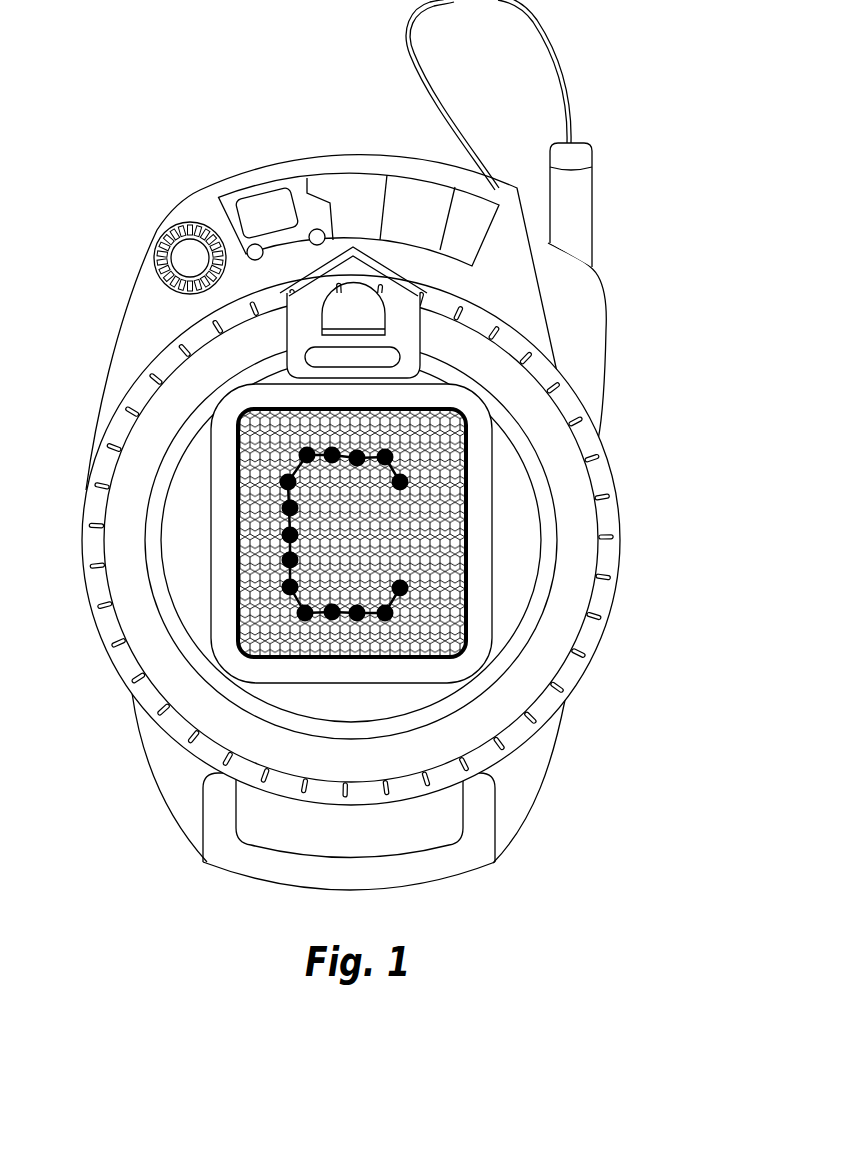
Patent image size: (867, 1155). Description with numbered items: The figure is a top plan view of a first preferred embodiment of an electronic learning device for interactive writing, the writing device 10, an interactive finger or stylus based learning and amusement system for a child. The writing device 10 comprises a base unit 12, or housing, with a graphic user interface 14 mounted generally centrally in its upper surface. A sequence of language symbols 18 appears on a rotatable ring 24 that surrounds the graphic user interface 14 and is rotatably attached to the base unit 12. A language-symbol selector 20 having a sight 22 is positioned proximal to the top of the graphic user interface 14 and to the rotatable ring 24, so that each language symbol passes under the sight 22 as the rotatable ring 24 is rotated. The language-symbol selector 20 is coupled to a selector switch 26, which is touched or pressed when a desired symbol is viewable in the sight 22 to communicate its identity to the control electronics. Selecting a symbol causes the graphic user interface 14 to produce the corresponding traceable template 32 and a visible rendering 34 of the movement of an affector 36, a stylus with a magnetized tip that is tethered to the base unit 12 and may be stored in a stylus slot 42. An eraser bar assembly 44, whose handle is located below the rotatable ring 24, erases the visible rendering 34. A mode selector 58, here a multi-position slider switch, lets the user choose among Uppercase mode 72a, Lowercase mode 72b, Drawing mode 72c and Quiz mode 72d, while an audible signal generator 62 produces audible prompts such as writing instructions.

The writing device 10 is at (341, 509).
The base unit 12 is at (528, 802).
The graphic user interface 14 is at (470, 535).
The sequence of language symbols 18 is at (100, 546).
The language-symbol selector 20 is at (400, 318).
The sight 22 is at (403, 312).
The rotatable ring 24 is at (612, 557).
The selector switch 26 is at (395, 360).
The traceable template 32 is at (405, 462).
The visible rendering 34 is at (400, 592).
The affector 36 is at (578, 200).
The stylus slot 42 is at (593, 268).
The eraser bar assembly 44 is at (225, 870).
The mode selector 58 is at (339, 171).
The audible signal generator 62 is at (190, 255).
The Uppercase mode 72a is at (238, 208).
The Lowercase mode 72b is at (355, 183).
The Drawing mode 72c is at (420, 192).
The Quiz mode 72d is at (470, 205).